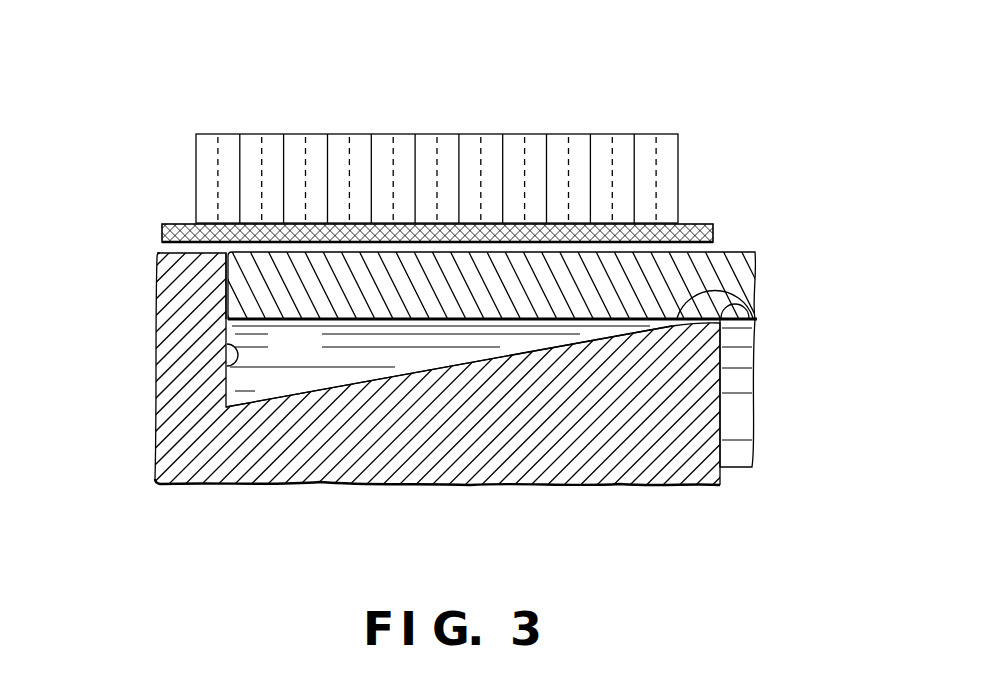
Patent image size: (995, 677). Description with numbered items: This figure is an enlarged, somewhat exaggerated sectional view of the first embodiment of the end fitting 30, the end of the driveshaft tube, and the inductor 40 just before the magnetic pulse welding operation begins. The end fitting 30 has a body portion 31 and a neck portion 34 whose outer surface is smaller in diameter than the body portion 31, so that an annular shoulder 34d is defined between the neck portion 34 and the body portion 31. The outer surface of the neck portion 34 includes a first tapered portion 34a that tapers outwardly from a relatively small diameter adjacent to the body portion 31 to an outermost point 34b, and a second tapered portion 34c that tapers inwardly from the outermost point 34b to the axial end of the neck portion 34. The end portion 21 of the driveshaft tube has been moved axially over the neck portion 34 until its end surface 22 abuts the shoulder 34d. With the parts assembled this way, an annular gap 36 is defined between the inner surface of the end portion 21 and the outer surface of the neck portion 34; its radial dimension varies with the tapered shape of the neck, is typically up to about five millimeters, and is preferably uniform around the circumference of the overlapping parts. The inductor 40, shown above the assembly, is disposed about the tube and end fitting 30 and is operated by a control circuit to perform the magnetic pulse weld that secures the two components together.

The inductor 40 is at (577, 143).
The end portion 21 is at (752, 273).
The end surface 22 is at (226, 283).
The end fitting 30 is at (473, 417).
The body portion 31 is at (172, 442).
The neck portion 34 is at (571, 453).
The first tapered portion 34a is at (343, 384).
The outermost point 34b is at (753, 297).
The second tapered portion 34c is at (745, 322).
The annular shoulder 34d is at (226, 369).
The annular gap 36 is at (283, 358).